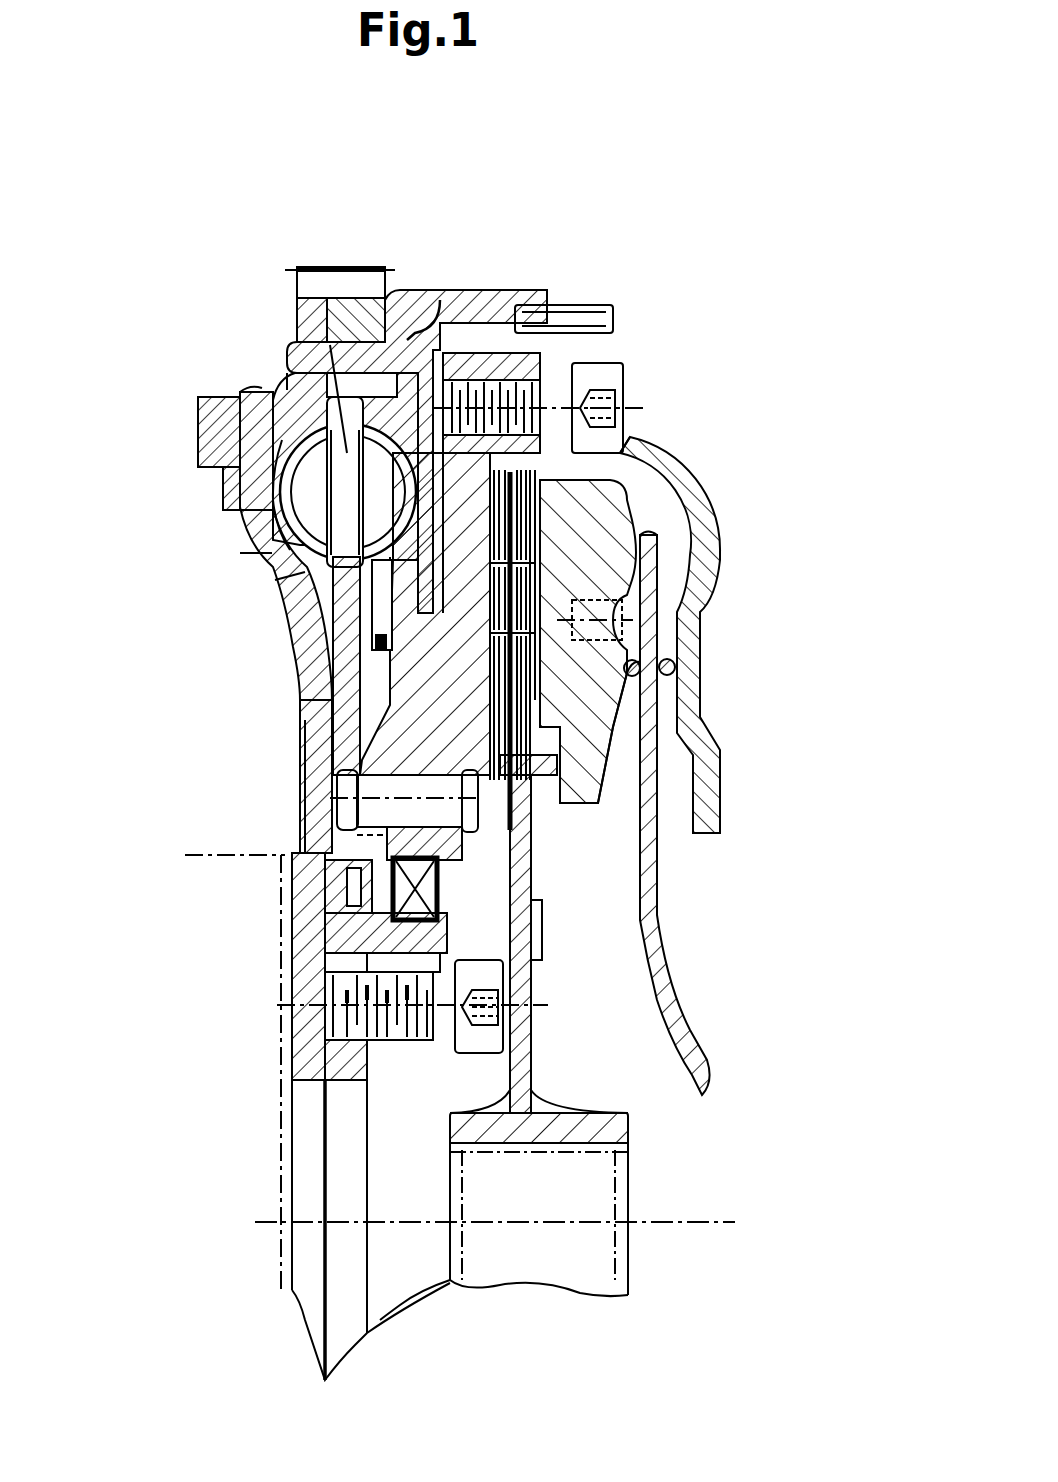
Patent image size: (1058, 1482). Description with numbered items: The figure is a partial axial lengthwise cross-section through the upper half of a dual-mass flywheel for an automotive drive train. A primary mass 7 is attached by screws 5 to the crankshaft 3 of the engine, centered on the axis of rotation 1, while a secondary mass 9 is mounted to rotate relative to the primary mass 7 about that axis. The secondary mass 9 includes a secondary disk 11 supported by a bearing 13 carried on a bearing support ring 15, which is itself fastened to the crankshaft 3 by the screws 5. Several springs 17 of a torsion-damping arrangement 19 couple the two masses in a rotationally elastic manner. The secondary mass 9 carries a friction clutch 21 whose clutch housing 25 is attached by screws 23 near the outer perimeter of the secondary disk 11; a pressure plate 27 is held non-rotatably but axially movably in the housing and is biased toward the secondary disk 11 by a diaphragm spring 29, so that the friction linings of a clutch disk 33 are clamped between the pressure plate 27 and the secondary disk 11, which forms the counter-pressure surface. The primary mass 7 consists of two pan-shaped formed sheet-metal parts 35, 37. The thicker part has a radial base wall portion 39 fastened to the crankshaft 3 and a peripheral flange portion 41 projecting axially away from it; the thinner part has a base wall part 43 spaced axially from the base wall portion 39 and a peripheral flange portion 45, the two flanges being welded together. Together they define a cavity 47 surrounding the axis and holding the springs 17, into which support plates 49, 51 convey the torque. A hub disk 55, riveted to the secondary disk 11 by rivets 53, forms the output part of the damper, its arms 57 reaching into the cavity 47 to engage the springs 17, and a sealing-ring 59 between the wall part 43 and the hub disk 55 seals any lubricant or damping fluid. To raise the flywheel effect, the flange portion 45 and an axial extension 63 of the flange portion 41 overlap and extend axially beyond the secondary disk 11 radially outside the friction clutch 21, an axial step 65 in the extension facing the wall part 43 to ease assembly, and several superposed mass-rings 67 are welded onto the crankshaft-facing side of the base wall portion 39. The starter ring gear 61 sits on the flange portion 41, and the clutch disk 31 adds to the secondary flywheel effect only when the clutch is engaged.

The axis of rotation 1 is at (645, 1222).
The crankshaft 3 is at (185, 855).
The screws 5 is at (534, 1076).
The primary mass 7 is at (270, 685).
The secondary mass 9 is at (458, 703).
The secondary disk 11 is at (455, 499).
The bearing 13 is at (400, 1045).
The bearing support ring 15 is at (343, 950).
The springs 17 is at (243, 553).
The torsion-damping arrangement 19 is at (275, 582).
The friction clutch 21 is at (730, 607).
The screws 23 is at (617, 365).
The clutch housing 25 is at (712, 577).
The pressure plate 27 is at (590, 810).
The diaphragm spring 29 is at (665, 966).
The clutch disk 31 is at (545, 924).
The clutch disk 33 is at (540, 672).
The formed sheet-metal part 35 is at (246, 388).
The formed sheet-metal part 37 is at (540, 512).
The base wall portion 39 is at (300, 624).
The peripheral flange portion 41 is at (326, 340).
The base wall part 43 is at (633, 440).
The peripheral flange portion 45 is at (545, 312).
The cavity 47 is at (262, 394).
The support plate 49 is at (240, 522).
The support plate 51 is at (450, 290).
The rivets 53 is at (385, 798).
The hub disk 55 is at (360, 714).
The arms 57 is at (312, 487).
The sealing-ring 59 is at (385, 657).
The starter ring gear 61 is at (367, 282).
The axial extension 63 is at (505, 293).
The axial step 65 is at (416, 292).
The mass-rings 67 is at (230, 489).